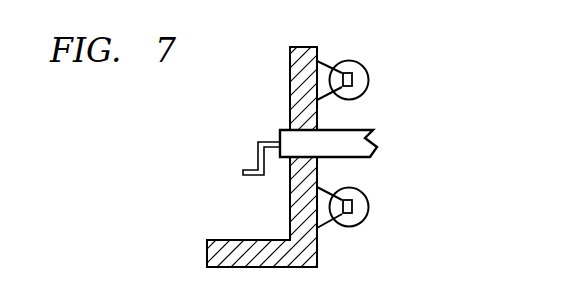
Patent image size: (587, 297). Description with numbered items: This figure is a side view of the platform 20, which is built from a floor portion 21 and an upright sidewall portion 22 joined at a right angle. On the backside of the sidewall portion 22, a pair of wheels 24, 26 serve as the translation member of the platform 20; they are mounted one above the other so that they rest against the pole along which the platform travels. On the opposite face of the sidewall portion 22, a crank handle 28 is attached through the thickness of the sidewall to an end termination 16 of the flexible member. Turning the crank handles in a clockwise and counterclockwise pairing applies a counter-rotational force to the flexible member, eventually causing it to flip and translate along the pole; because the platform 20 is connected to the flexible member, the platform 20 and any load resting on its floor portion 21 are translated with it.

The end termination 16 is at (348, 135).
The platform 20 is at (443, 138).
The floor portion 21 is at (236, 240).
The sidewall portion 22 is at (290, 82).
The wheel 24 is at (368, 78).
The wheel 26 is at (368, 205).
The crank handle 28 is at (258, 141).